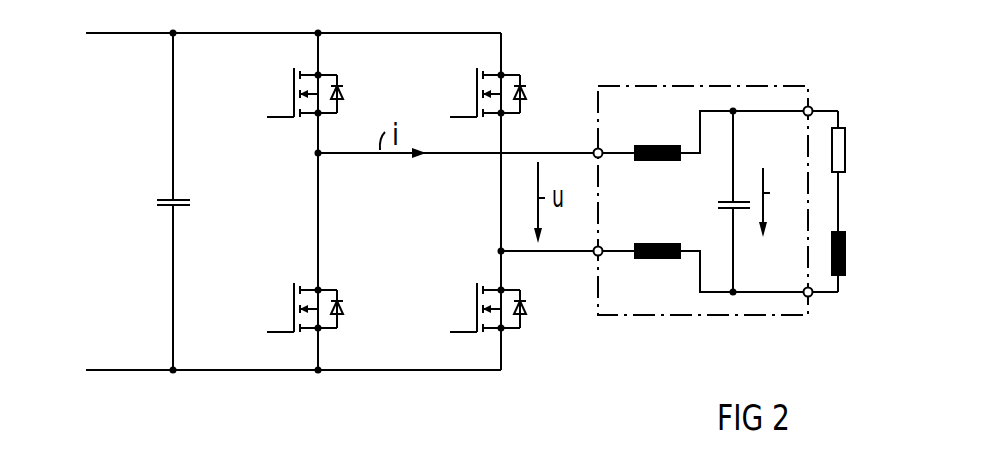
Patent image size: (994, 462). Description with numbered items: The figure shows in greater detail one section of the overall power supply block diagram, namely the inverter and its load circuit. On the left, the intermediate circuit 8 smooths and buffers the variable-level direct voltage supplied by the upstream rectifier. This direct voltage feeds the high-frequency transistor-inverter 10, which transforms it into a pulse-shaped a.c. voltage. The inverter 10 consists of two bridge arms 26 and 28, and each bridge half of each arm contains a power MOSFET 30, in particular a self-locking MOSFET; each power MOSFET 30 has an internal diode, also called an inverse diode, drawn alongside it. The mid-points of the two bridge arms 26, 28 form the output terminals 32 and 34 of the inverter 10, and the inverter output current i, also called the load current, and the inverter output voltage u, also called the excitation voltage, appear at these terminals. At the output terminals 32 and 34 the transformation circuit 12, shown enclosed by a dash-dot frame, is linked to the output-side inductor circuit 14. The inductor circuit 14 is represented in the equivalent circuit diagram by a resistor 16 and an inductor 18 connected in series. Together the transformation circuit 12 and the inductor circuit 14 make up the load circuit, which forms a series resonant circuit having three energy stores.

The intermediate circuit 8 is at (95, 218).
The high-frequency transistor-inverter 10 is at (410, 202).
The transformation circuit 12 is at (685, 86).
The inductor circuit 14 is at (859, 201).
The resistor 16 is at (848, 153).
The inductor 18 is at (848, 258).
The bridge arm 26 is at (316, 222).
The bridge arm 28 is at (500, 192).
The power MOSFET 30 is at (334, 71).
The output terminal 32 is at (315, 153).
The output terminal 34 is at (499, 250).